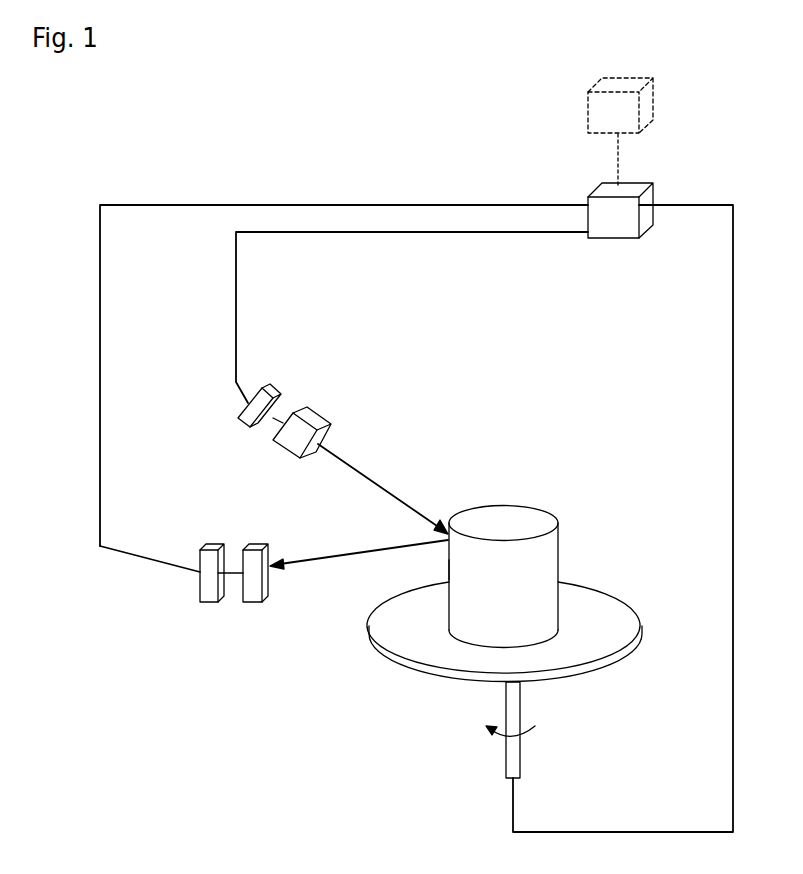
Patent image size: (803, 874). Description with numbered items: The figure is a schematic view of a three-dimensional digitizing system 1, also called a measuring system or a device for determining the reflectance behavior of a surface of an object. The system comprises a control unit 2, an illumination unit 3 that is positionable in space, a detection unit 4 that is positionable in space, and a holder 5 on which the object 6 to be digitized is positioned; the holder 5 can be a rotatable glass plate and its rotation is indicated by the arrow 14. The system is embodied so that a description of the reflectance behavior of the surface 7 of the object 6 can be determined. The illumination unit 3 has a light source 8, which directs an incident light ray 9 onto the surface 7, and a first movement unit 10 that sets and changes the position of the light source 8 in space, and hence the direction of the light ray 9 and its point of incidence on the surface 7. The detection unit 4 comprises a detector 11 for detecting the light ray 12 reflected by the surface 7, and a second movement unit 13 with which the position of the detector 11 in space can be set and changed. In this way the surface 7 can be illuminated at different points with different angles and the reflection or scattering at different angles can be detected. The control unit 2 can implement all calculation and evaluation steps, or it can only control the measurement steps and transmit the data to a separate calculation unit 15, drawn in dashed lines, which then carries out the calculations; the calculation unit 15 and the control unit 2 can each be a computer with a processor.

The 3-D digitizing system 1 is at (592, 241).
The control unit 2 is at (628, 239).
The illumination unit 3 is at (323, 392).
The detection unit 4 is at (227, 589).
The holder 5 is at (600, 583).
The object 6 is at (552, 513).
The surface 7 is at (448, 568).
The light source 8 is at (335, 427).
The light ray 9 is at (372, 480).
The first movement unit 10 is at (275, 387).
The detector 11 is at (257, 545).
The reflected light ray 12 is at (330, 555).
The second movement unit 13 is at (212, 545).
The arrow 14 is at (532, 732).
The calculation unit 15 is at (653, 107).